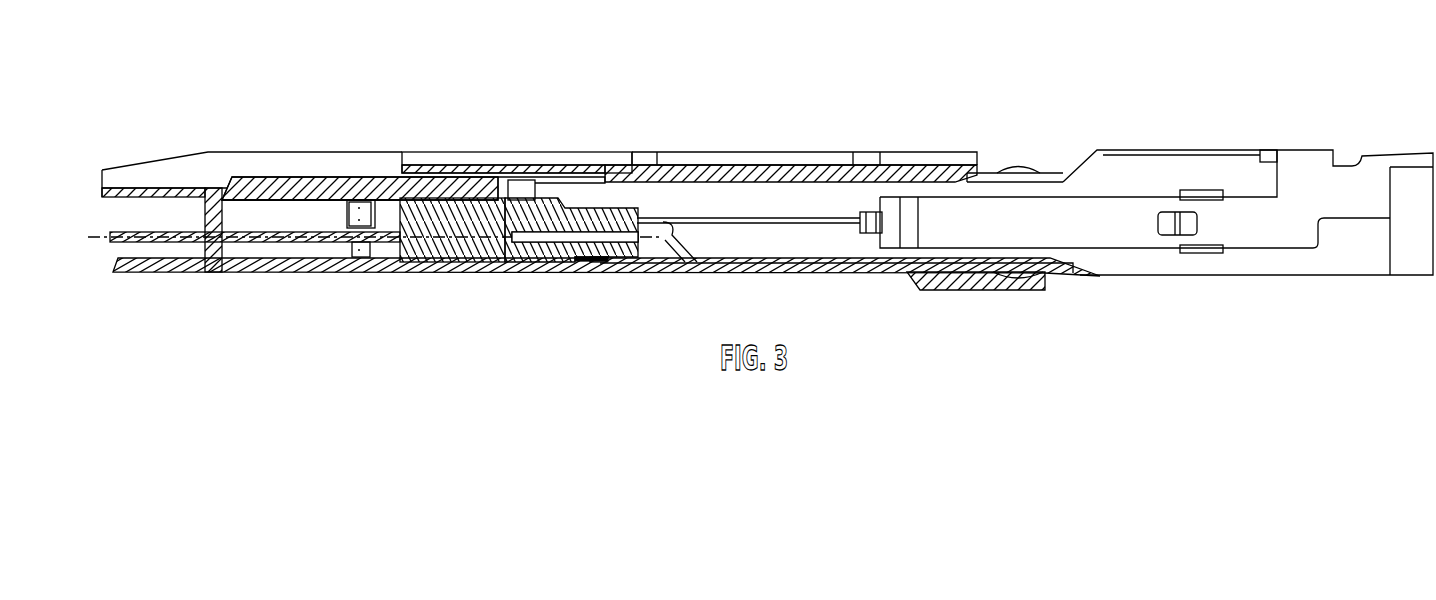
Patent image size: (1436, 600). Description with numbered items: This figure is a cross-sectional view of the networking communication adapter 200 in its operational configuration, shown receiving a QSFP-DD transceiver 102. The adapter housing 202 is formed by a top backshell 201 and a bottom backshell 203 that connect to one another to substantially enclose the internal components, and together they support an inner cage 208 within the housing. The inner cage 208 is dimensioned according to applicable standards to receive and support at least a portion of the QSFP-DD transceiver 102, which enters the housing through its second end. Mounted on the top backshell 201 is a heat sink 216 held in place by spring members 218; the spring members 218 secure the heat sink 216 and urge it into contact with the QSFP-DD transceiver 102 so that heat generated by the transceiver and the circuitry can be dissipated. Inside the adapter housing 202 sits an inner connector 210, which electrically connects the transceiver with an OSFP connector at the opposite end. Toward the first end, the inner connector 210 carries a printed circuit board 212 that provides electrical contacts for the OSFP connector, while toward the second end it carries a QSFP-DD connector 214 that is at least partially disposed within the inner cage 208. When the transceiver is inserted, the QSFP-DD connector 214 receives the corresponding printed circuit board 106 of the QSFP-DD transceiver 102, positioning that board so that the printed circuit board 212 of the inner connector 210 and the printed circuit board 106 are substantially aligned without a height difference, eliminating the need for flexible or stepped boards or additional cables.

The networking communication adapter 200 is at (164, 114).
The top backshell 201 is at (307, 148).
The adapter housing 202 is at (890, 116).
The bottom backshell 203 is at (212, 280).
The inner cage 208 is at (1014, 175).
The inner connector 210 is at (392, 249).
The printed circuit board 212 is at (104, 224).
The QSFP-DD connector 214 is at (505, 254).
The heat sink 216 is at (533, 148).
The spring members 218 is at (838, 150).
The printed circuit board 106 is at (601, 246).
The QSFP-DD transceiver 102 is at (1104, 235).